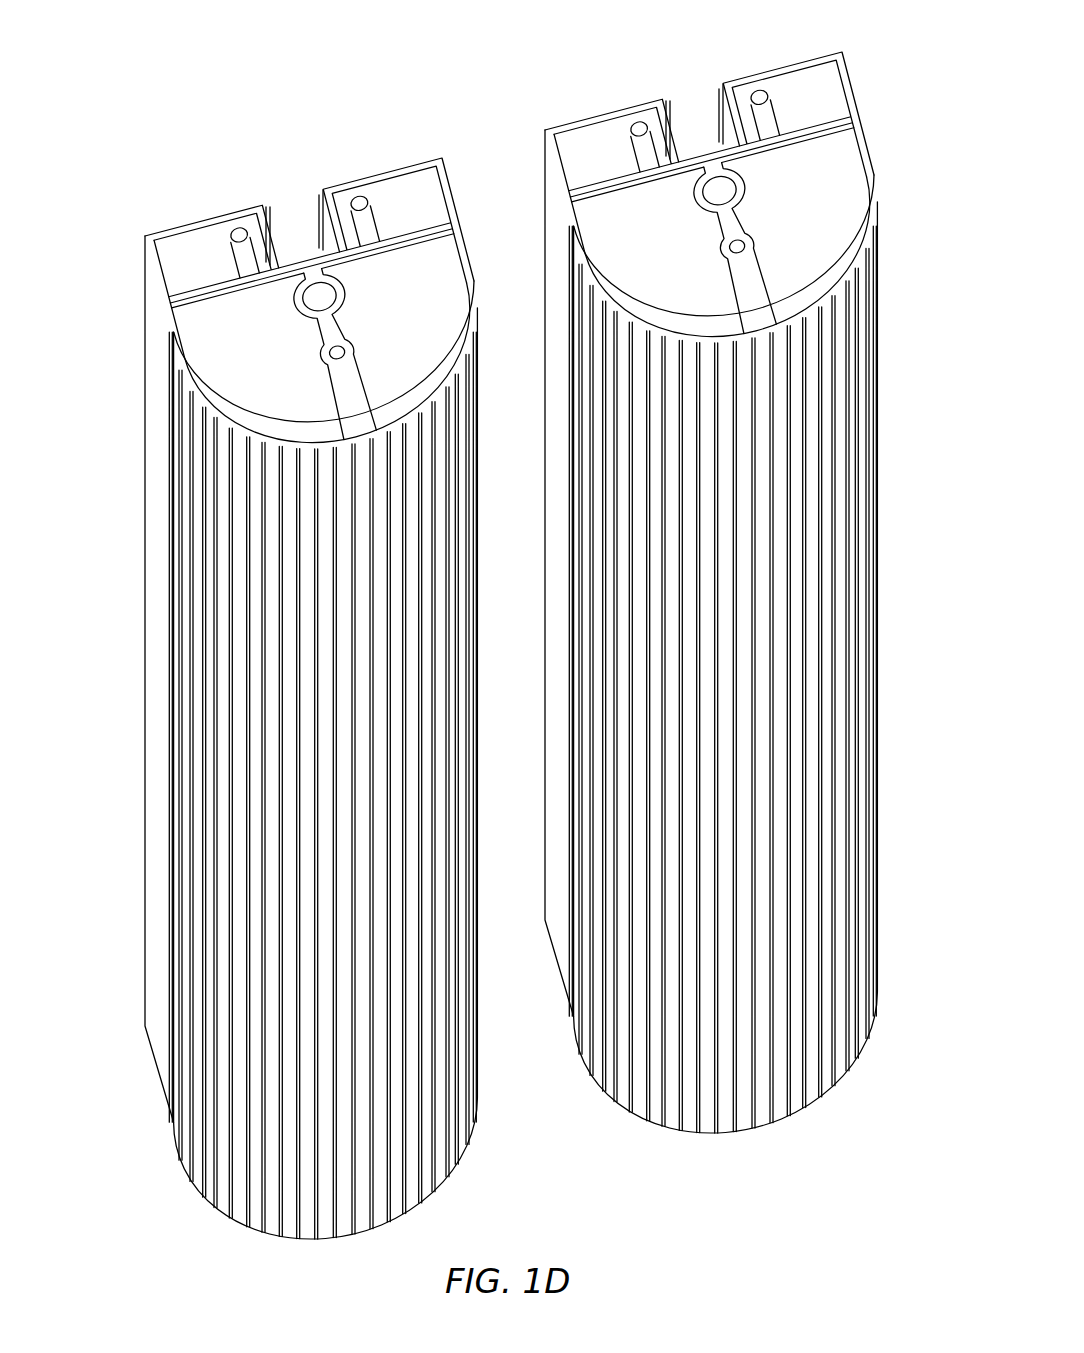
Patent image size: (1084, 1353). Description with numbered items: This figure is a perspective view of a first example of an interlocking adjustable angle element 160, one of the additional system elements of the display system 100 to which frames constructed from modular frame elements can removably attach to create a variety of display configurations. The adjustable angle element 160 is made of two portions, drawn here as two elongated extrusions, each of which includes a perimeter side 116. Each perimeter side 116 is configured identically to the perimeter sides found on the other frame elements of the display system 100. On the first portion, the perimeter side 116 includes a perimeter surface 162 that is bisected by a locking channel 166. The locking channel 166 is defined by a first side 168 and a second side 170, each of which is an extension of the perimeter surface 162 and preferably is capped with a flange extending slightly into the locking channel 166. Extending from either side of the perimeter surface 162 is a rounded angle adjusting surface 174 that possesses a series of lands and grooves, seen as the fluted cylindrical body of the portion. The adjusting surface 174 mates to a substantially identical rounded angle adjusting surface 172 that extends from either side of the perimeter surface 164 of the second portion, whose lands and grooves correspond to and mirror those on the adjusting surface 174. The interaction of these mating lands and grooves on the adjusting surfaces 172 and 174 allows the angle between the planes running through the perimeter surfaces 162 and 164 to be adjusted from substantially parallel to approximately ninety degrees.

The display system 100 is at (140, 22).
The adjustable angle element 160 is at (178, 104).
The perimeter surface 162 is at (213, 229).
The perimeter surface 164 is at (603, 105).
The perimeter side 116 is at (402, 168).
The locking channel 166 is at (296, 207).
The first side 168 is at (322, 208).
The second side 170 is at (258, 214).
The rounded angle adjusting surface 172 is at (442, 442).
The rounded angle adjusting surface 174 is at (838, 328).